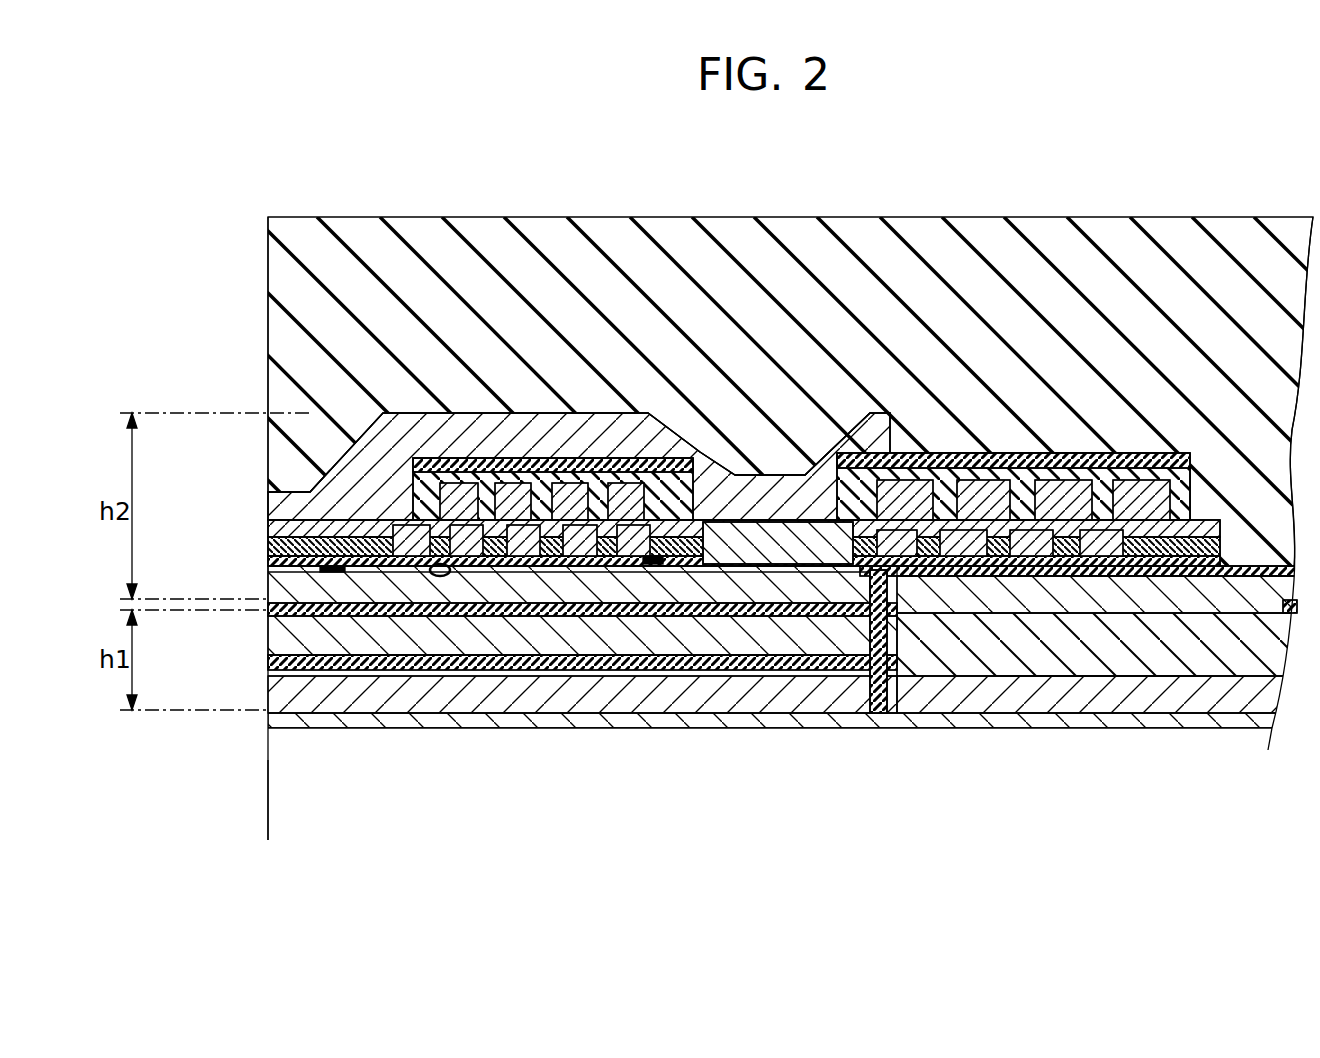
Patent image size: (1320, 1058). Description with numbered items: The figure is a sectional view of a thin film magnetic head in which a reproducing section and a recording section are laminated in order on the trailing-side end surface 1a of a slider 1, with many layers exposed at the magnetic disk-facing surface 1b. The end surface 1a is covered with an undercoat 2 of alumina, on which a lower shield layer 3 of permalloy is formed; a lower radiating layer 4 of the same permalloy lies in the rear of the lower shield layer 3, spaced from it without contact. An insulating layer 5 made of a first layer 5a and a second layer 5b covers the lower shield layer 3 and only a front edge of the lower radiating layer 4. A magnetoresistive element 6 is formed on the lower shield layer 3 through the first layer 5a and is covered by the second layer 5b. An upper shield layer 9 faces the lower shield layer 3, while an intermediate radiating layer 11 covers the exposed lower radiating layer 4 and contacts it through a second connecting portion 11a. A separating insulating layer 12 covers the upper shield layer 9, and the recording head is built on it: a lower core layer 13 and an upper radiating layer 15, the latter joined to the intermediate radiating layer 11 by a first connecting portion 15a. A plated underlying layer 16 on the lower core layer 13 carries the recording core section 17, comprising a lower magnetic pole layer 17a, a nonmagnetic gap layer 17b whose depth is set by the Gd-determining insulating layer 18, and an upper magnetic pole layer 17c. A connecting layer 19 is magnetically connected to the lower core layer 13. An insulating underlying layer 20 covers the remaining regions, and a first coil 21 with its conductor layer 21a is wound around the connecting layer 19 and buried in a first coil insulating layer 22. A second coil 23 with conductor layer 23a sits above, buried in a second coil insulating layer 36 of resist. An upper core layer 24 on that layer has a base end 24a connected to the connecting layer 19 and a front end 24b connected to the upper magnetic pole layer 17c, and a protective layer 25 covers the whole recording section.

The slider 1 is at (268, 787).
The trailing-side end surface 1a is at (290, 745).
The magnetic disk-facing surface 1b is at (268, 805).
The undercoat 2 is at (278, 718).
The lower shield layer 3 is at (278, 700).
The lower radiating layer 4 is at (1188, 705).
The insulating layer 5 is at (492, 700).
The first layer 5a is at (528, 605).
The second layer 5b is at (490, 603).
The magnetoresistive element 6 is at (278, 665).
The upper shield layer 9 is at (278, 635).
The intermediate radiating layer 11 is at (1100, 650).
The second connecting portion 11a is at (1140, 678).
The separating insulating layer 12 is at (870, 600).
The lower core layer 13 is at (885, 650).
The upper radiating layer 15 is at (945, 590).
The first connecting portion 15a is at (1025, 590).
The plated underlying layer 16 is at (335, 572).
The recording core section 17 is at (679, 551).
The lower magnetic pole layer 17a is at (700, 575).
The nonmagnetic gap layer 17b is at (268, 555).
The upper magnetic pole layer 17c is at (268, 527).
The Gd-determining insulating layer 18 is at (378, 572).
The connecting layer 19 is at (740, 566).
The insulating underlying layer 20 is at (443, 576).
The first coil 21 is at (580, 557).
The conductor layer 21a is at (652, 566).
The first coil insulating layer 22 is at (412, 557).
The second coil 23 is at (520, 485).
The conductor layer 23a is at (500, 465).
The upper core layer 24 is at (270, 500).
The base end 24a is at (775, 495).
The front end 24b is at (275, 460).
The protective layer 25 is at (845, 285).
The second coil insulating layer 36 is at (660, 495).